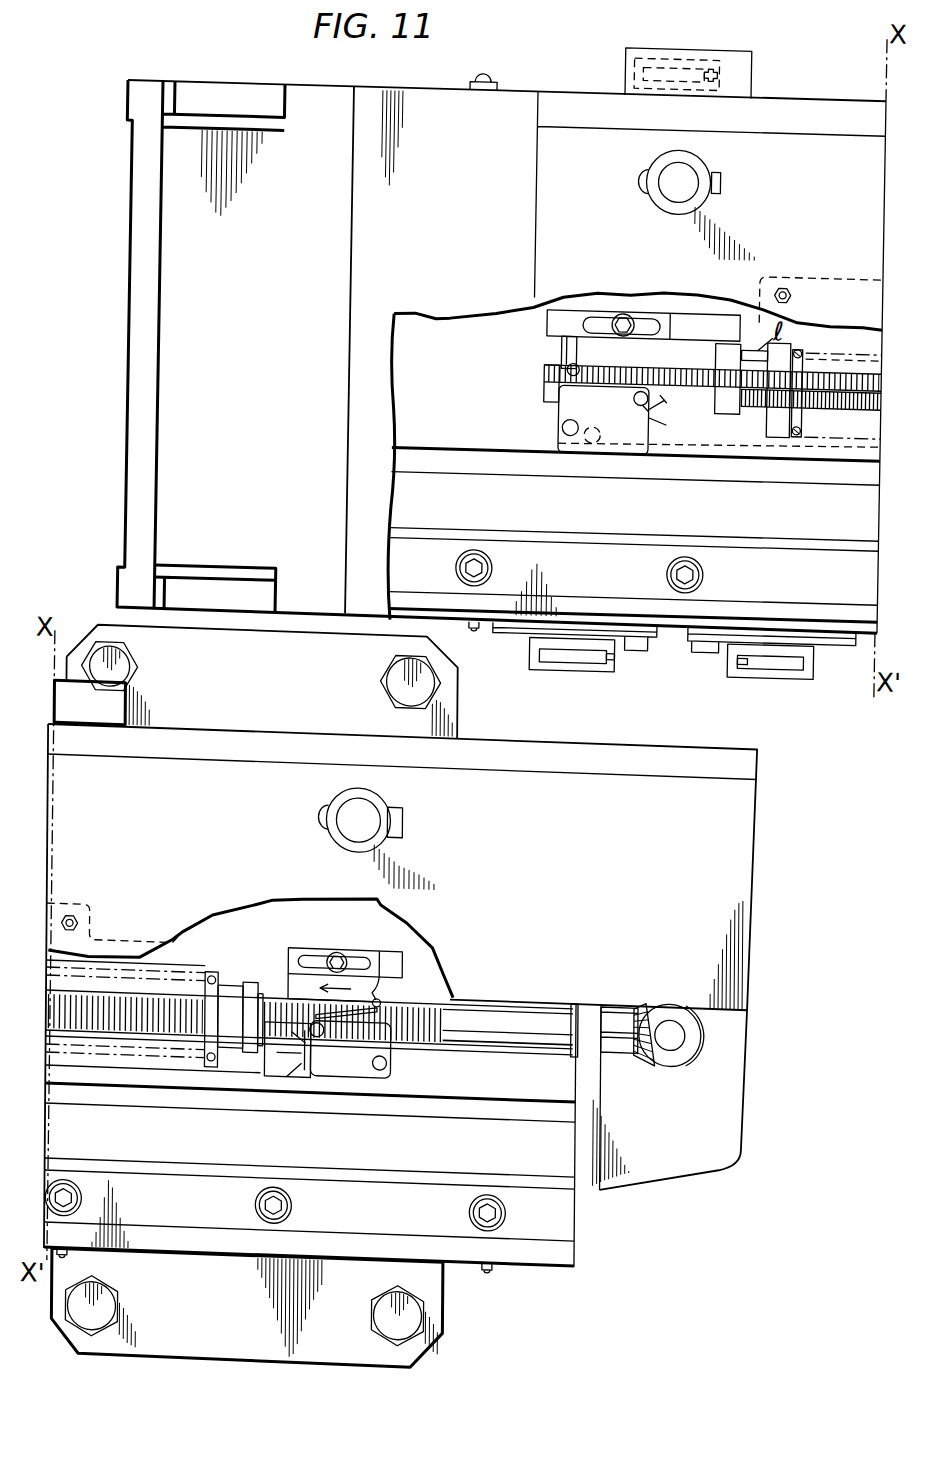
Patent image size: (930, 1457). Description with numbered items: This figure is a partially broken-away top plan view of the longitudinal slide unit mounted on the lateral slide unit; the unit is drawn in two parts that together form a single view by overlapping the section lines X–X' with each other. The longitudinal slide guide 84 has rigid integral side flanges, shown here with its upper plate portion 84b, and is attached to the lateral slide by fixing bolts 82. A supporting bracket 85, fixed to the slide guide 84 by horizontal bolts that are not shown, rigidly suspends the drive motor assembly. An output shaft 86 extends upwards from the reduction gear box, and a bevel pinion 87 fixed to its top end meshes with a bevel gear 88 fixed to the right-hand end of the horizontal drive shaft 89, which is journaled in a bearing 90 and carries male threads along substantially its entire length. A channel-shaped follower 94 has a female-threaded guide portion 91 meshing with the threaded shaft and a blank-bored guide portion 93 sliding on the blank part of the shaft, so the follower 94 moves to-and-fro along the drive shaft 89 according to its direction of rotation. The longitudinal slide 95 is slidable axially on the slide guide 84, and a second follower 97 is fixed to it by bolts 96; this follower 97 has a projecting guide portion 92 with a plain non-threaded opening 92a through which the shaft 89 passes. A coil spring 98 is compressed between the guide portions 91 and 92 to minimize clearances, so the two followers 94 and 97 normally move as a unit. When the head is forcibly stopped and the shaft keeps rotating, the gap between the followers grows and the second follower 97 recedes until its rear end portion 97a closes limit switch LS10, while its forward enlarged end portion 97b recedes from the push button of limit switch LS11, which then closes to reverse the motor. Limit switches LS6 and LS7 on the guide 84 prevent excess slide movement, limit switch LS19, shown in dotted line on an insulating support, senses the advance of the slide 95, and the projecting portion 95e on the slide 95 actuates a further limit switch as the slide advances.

The fixing bolts 82 is at (126, 665).
The longitudinal slide guide 84 is at (524, 1241).
The top plate of base 84b is at (298, 713).
The supporting bracket 85 is at (658, 1145).
The output shaft 86 is at (669, 1016).
The bevel pinion 87 is at (694, 1014).
The bevel gear 88 is at (624, 997).
The drive shaft 89 is at (495, 1004).
The bearing 90 is at (578, 1036).
The female-threaded guide portion 91 is at (245, 1061).
The projecting guide portion 92 is at (781, 412).
The plain non-threaded opening 92a is at (798, 331).
The blank-bored guide portion 93 is at (731, 412).
The follower 94 is at (843, 420).
The longitudinal slide 95 is at (746, 801).
The projecting portion 95e is at (634, 48).
The bolts 96 is at (786, 269).
The second follower 97 is at (801, 318).
The rear end portion 97a is at (397, 990).
The forward enlarged end portion 97b is at (589, 334).
The coil spring 98 is at (823, 436).
The limit switch LS6 is at (799, 661).
The limit switch LS7 is at (606, 659).
The limit switch LS10 is at (327, 1050).
The limit switch LS11 is at (569, 400).
The limit switch LS19 is at (706, 42).